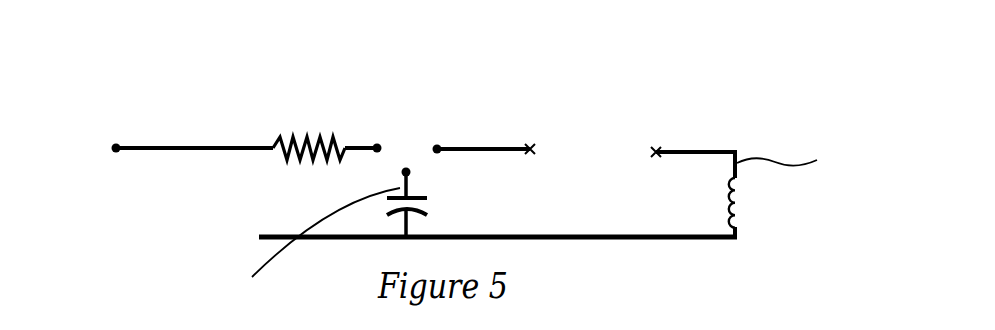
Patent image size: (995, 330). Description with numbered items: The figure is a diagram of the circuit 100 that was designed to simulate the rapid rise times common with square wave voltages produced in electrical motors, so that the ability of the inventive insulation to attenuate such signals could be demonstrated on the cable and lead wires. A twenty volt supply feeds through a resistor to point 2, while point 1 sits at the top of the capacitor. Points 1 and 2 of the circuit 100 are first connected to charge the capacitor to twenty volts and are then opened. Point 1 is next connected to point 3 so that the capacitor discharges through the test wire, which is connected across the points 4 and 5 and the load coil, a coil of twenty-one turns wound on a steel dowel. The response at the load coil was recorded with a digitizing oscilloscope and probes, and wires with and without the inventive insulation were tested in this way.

The circuit 100 is at (444, 157).
The point 1 is at (401, 172).
The point 2 is at (379, 136).
The point 3 is at (438, 137).
The point 4 is at (530, 137).
The point 5 is at (656, 140).